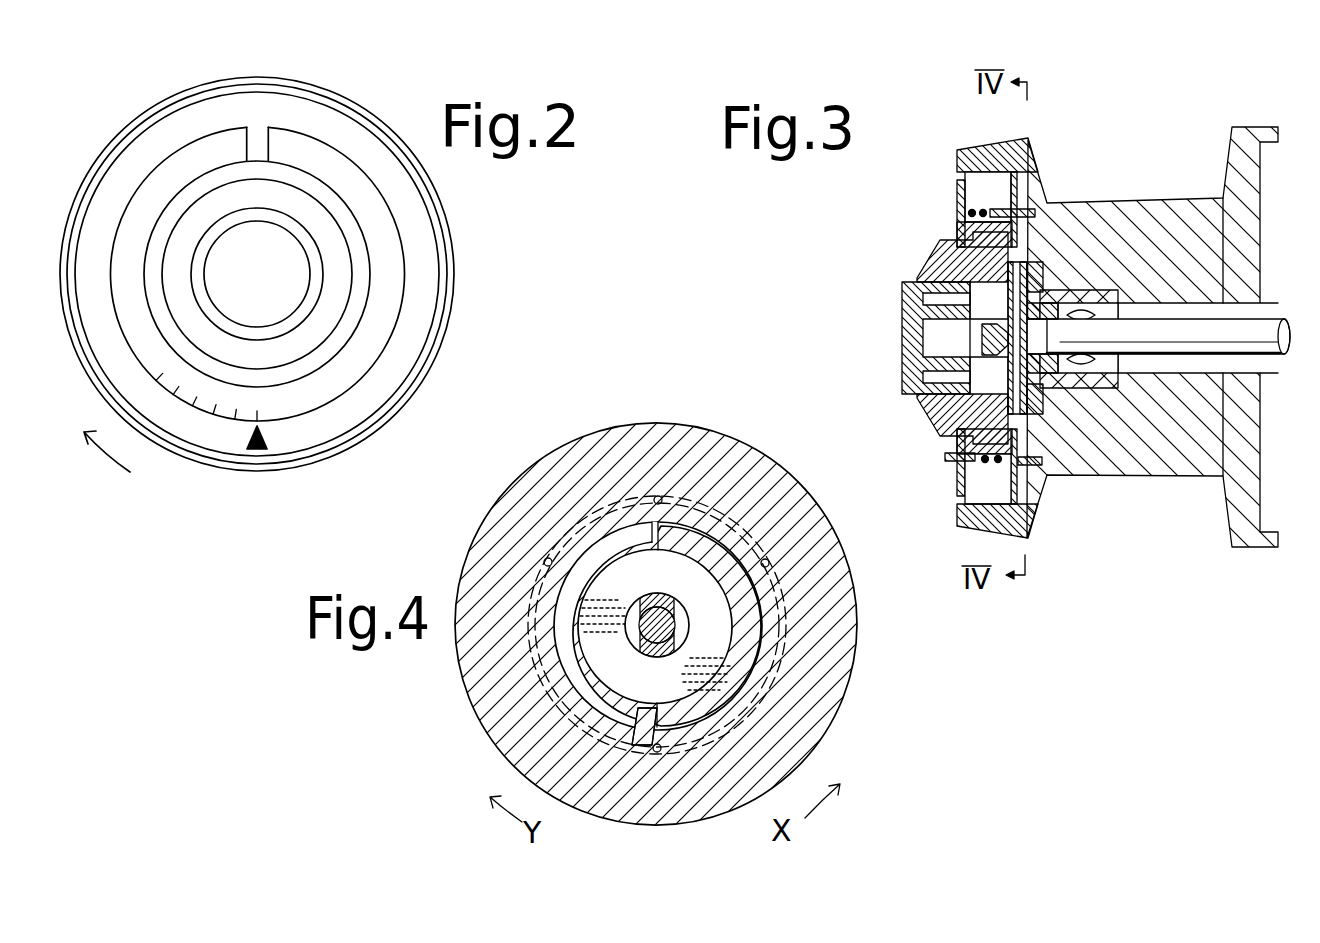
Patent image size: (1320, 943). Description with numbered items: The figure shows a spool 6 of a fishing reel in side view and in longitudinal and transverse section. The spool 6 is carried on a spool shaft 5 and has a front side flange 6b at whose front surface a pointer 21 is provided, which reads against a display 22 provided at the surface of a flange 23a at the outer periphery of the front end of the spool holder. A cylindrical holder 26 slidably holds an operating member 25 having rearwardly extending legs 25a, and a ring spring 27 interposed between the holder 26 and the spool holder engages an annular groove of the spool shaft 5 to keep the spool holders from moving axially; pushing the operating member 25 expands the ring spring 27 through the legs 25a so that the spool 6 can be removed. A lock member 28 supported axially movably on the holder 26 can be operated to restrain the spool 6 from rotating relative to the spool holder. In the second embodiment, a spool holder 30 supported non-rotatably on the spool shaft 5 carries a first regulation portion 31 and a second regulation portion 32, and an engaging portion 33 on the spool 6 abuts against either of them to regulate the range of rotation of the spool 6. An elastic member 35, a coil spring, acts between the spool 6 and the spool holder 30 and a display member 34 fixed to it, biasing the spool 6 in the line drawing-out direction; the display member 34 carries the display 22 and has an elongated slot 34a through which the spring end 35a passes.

In FIG. 3, the spool shaft 5 is at (1278, 322).
In FIG. 4, the spool shaft 5 is at (676, 620).
In FIG. 2, the spool 6 is at (312, 468).
In FIG. 3, the spool 6 is at (1130, 200).
In FIG. 4, the spool 6 is at (488, 708).
In FIG. 3, the front side flange 6b is at (968, 148).
In FIG. 2, the pointer 21 is at (257, 447).
In FIG. 3, the pointer 21 is at (957, 158).
In FIG. 2, the display 22 is at (214, 413).
In FIG. 3, the display 22 is at (957, 186).
In FIG. 2, the flange 23a is at (352, 380).
In FIG. 2, the operating member 25 is at (302, 262).
In FIG. 3, the operating member 25 is at (902, 316).
In FIG. 3, the legs 25a is at (982, 340).
In FIG. 2, the cylindrical holder 26 is at (340, 285).
In FIG. 3, the cylindrical holder 26 is at (917, 264).
In FIG. 3, the ring spring 27 is at (917, 400).
In FIG. 2, the lock member 28 is at (350, 330).
In FIG. 3, the lock member 28 is at (1017, 338).
In FIG. 3, the spool holder 30 is at (1110, 390).
In FIG. 4, the spool holder 30 is at (758, 632).
In FIG. 4, the first regulation portion 31 is at (654, 742).
In FIG. 4, the second regulation portion 32 is at (650, 522).
In FIG. 4, the engaging portion 33 is at (636, 740).
In FIG. 3, the display member 34 is at (957, 228).
In FIG. 3, the elongated slot 34a is at (955, 478).
In FIG. 3, the elastic member 35 is at (995, 207).
In FIG. 4, the elastic member 35 is at (735, 518).
In FIG. 3, the spring end 35a is at (945, 457).